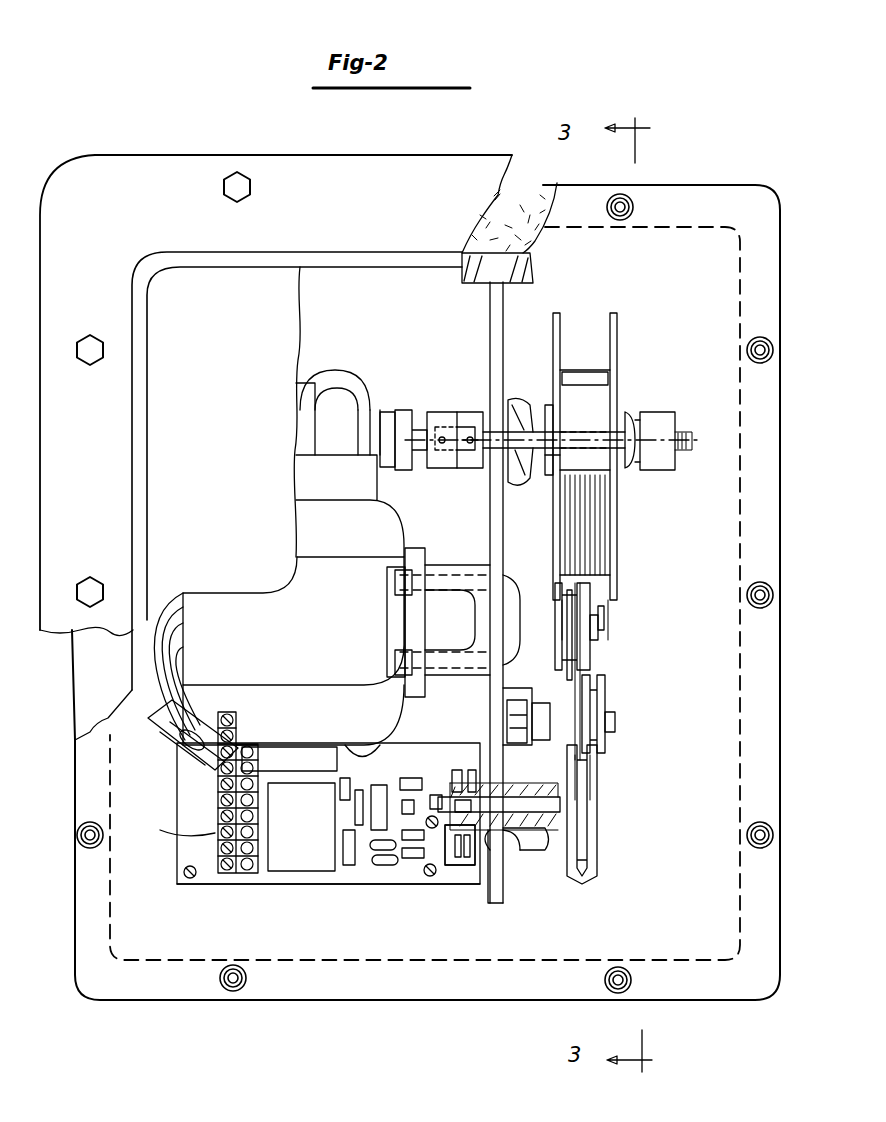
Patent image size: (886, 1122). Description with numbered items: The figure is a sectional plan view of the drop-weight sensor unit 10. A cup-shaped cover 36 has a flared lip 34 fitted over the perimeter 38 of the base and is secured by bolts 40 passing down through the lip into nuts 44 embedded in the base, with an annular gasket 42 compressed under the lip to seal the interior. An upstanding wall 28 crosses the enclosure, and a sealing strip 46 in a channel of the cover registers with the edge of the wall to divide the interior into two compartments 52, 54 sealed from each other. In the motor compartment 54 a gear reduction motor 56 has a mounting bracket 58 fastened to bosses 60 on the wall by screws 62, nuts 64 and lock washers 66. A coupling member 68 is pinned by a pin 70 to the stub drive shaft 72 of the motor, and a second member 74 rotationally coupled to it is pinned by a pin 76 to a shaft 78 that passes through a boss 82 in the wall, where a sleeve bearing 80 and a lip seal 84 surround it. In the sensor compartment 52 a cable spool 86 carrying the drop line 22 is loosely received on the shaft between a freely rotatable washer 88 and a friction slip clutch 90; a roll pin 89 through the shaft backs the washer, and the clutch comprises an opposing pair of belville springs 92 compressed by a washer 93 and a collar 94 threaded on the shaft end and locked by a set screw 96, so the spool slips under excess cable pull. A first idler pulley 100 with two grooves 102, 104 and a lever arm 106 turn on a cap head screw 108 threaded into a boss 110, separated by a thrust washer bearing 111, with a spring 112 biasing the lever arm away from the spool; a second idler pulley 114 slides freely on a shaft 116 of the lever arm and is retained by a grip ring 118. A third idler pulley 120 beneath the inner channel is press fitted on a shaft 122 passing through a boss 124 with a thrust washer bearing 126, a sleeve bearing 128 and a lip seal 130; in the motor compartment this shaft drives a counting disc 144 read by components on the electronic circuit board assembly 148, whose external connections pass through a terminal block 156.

The sensor unit 10 is at (570, 72).
The drop line 22 is at (603, 575).
The wall 28 is at (503, 556).
The lip 34 is at (37, 215).
The cover 36 is at (285, 255).
The perimeter 38 is at (706, 185).
The bolts 40 is at (240, 170).
The gasket 42 is at (508, 183).
The nuts 44 is at (760, 336).
The sealing strip 46 is at (535, 265).
The compartment 52 is at (560, 965).
The compartment 54 is at (345, 938).
The gear reduction motor 56 is at (347, 368).
The mounting bracket 58 is at (426, 560).
The bosses 60 is at (475, 632).
The screws 62 is at (518, 642).
The nuts 64 is at (400, 595).
The lock washers 66 is at (405, 578).
The coupling member 68 is at (430, 410).
The pin 70 is at (418, 462).
The stub drive shaft 72 is at (423, 430).
The second member 74 is at (470, 410).
The pin 76 is at (462, 470).
The shaft 78 is at (552, 440).
The sleeve bearing 80 is at (525, 430).
The boss 82 is at (515, 478).
The lip seal 84 is at (548, 405).
The cable spool 86 is at (617, 320).
The washer 88 is at (555, 460).
The roll pin 89 is at (560, 405).
The friction slip clutch 90 is at (677, 391).
The belville springs 92 is at (630, 420).
The washer 93 is at (650, 408).
The collar 94 is at (677, 452).
The set screw 96 is at (690, 445).
The first idler pulley 100 is at (607, 725).
The pulley groove 102 is at (605, 755).
The pulley groove 104 is at (570, 742).
The lever arm 106 is at (590, 598).
The cap head screw 108 is at (616, 722).
The boss 110 is at (525, 702).
The thrust washer bearing 111 is at (578, 662).
The spring 112 is at (540, 718).
The second idler pulley 114 is at (590, 615).
The shaft 116 is at (575, 648).
The grip ring 118 is at (605, 622).
The third idler pulley 120 is at (592, 880).
The shaft 122 is at (600, 810).
The boss 124 is at (532, 848).
The thrust washer bearing 126 is at (560, 850).
The sleeve bearing 128 is at (488, 870).
The lip seal 130 is at (578, 822).
The counting disc 144 is at (450, 866).
The electronic circuit board assembly 148 is at (300, 888).
The terminal block 156 is at (215, 838).